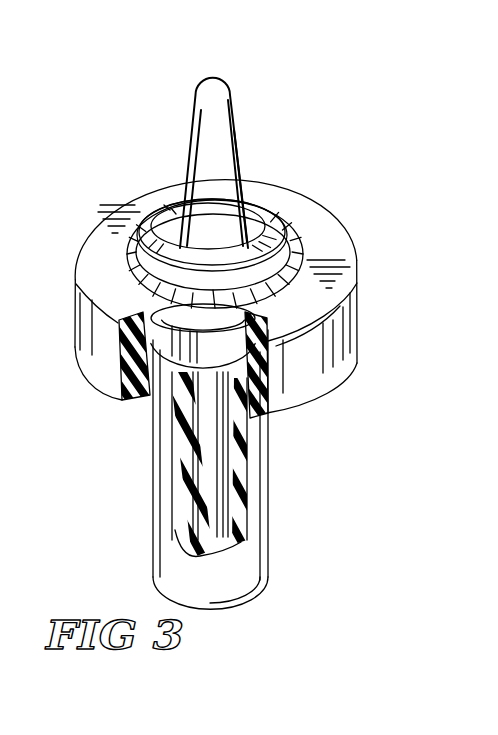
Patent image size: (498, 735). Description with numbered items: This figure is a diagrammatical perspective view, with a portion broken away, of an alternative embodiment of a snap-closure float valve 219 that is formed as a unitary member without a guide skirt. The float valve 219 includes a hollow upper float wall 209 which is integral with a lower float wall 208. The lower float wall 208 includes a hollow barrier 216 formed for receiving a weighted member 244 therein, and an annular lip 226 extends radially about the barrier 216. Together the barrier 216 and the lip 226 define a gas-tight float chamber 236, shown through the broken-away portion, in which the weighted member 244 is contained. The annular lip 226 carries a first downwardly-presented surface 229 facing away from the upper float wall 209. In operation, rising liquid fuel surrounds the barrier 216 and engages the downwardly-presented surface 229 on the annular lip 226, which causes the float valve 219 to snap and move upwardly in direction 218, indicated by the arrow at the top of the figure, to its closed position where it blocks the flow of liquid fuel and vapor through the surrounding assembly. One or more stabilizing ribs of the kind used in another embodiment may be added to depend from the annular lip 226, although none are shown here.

The direction 218 is at (214, 60).
The float valve 219 is at (88, 176).
The hollow upper float wall 209 is at (300, 224).
The float chamber 236 is at (146, 335).
The lower float wall 208 is at (118, 411).
The first downwardly-presented surface 229 is at (150, 372).
The annular lip 226 is at (257, 422).
The hollow barrier 216 is at (262, 511).
The weighted member 244 is at (202, 513).